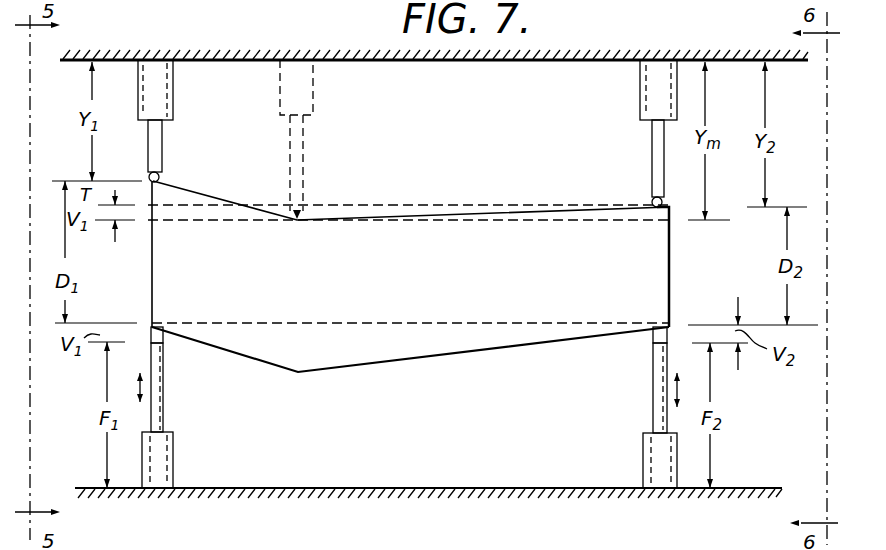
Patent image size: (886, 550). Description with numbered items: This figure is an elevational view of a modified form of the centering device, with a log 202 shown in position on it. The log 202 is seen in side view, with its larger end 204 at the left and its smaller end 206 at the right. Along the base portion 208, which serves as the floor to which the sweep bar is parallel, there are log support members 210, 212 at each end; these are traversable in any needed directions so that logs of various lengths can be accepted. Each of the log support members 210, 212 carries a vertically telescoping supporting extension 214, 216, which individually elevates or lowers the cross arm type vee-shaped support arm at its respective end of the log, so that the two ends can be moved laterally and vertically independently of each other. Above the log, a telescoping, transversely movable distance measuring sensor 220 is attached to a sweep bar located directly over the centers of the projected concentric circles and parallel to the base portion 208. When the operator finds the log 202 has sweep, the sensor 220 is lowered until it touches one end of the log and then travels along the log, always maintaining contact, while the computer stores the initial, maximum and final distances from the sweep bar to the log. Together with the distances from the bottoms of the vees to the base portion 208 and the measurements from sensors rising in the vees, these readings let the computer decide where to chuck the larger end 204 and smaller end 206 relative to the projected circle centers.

The log 202 is at (358, 362).
The larger end of the log 204 is at (152, 284).
The smaller end of the log 206 is at (669, 290).
The base portion 208 is at (163, 337).
The log support member 210 is at (173, 446).
The log support member 212 is at (645, 456).
The vertically telescoping supporting extension 214 is at (163, 389).
The vertically telescoping supporting extension 216 is at (654, 389).
The traveling telescoping sensor 220 is at (173, 88).